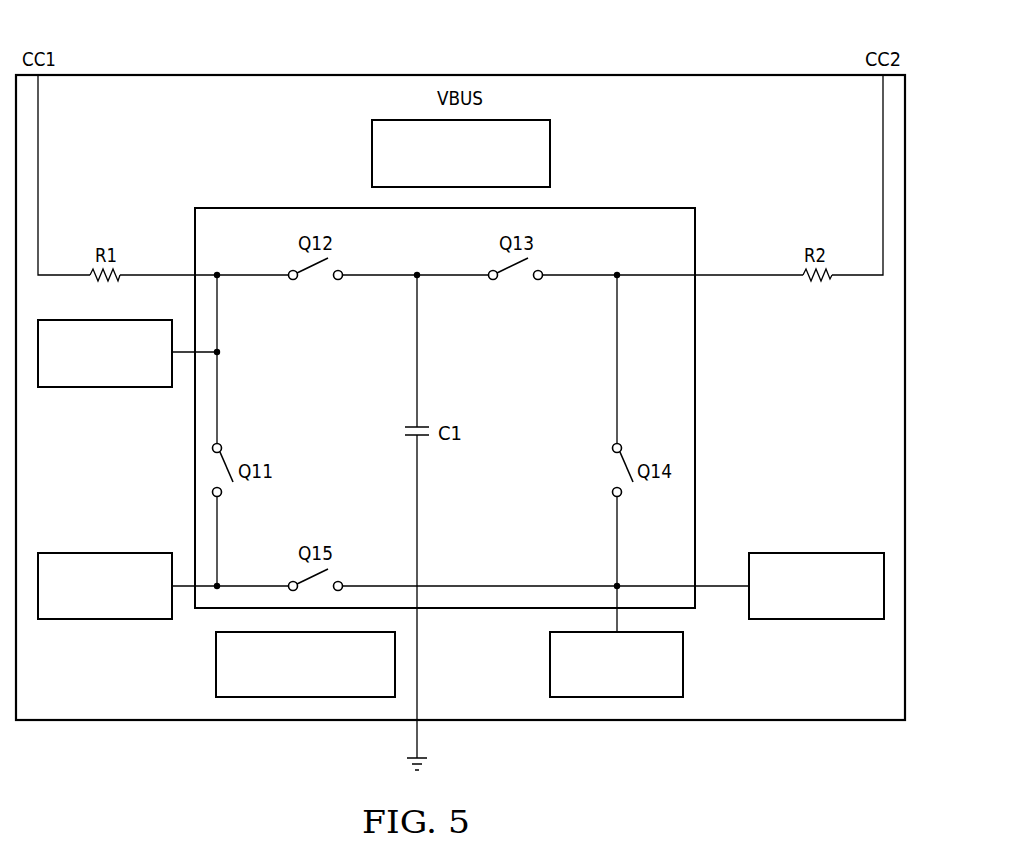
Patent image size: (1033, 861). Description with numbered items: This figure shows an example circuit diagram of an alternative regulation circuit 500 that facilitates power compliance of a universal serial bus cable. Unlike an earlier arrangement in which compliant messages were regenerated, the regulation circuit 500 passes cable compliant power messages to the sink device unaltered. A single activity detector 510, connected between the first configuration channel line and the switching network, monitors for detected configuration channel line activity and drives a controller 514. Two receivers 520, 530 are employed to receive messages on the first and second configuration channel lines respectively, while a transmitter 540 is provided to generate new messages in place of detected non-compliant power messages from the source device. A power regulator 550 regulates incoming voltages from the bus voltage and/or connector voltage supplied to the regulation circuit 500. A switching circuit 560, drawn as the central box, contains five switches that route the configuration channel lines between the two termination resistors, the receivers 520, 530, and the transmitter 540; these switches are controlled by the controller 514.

The regulation circuit 500 is at (266, 71).
The activity detector 510 is at (105, 388).
The controller 514 is at (215, 665).
The receiver 520 is at (105, 620).
The receiver 530 is at (816, 620).
The transmitter 540 is at (684, 665).
The power regulator 550 is at (551, 152).
The switching circuit 560 is at (700, 228).